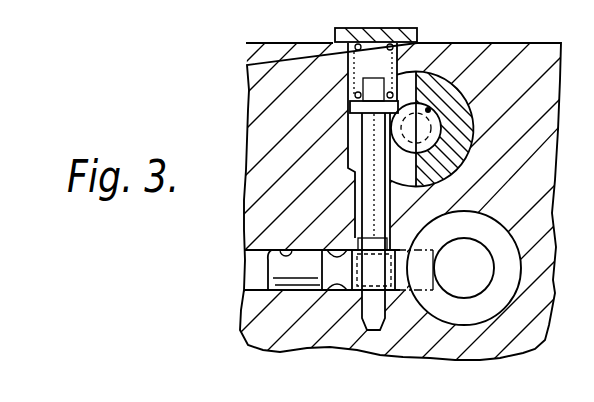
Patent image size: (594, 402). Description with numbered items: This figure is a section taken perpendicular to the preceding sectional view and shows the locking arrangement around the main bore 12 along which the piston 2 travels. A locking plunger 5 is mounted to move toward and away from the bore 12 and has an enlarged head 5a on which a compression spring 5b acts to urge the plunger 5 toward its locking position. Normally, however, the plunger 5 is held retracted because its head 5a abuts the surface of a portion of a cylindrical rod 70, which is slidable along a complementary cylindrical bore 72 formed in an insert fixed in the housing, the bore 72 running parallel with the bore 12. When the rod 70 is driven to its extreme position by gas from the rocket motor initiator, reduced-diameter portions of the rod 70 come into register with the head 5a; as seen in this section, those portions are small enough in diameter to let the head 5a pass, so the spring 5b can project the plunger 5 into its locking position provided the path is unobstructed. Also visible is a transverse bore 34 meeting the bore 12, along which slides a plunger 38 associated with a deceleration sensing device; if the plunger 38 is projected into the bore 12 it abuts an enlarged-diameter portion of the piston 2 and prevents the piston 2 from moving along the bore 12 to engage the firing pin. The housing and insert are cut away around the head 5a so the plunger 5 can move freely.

The piston 2 is at (482, 275).
The locking plunger 5 is at (368, 207).
The enlarged head 5a is at (350, 104).
The compression spring 5b is at (418, 43).
The bore 12 is at (512, 242).
The transverse bore 34 is at (290, 249).
The plunger 38 is at (273, 283).
The cylindrical rod 70 is at (437, 131).
The cylindrical bore 72 is at (428, 112).